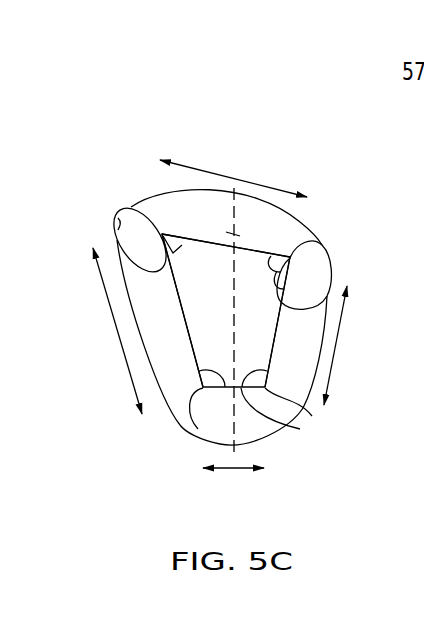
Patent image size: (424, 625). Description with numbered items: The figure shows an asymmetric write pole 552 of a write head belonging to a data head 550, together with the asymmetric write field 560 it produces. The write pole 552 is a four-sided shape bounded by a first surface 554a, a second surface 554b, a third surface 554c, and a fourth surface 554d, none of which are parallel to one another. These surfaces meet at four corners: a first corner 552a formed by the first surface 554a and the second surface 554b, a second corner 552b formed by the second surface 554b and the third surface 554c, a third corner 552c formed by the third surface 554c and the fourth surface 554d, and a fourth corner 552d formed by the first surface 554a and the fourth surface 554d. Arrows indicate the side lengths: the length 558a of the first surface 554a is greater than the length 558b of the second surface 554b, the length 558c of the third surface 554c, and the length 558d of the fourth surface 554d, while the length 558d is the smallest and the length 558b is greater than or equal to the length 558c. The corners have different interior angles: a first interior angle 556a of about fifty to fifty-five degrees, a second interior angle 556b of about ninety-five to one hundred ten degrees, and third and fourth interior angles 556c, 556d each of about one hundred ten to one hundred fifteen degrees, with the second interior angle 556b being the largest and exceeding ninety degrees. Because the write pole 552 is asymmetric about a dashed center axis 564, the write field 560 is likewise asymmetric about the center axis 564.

The data head 550 is at (146, 118).
The write pole 552 is at (227, 300).
The first corner 552a is at (130, 208).
The second corner 552b is at (345, 219).
The third corner 552c is at (311, 413).
The fourth corner 552d is at (195, 429).
The first surface 554a is at (117, 238).
The second surface 554b is at (266, 239).
The third surface 554c is at (329, 292).
The fourth surface 554d is at (268, 426).
The first interior angle 556a is at (181, 248).
The second interior angle 556b is at (302, 262).
The third interior angle 556c is at (260, 372).
The fourth interior angle 556d is at (206, 369).
The length of the first surface 558a is at (113, 328).
The length of the second surface 558b is at (213, 172).
The length of the third surface 558c is at (345, 343).
The length of the fourth surface 558d is at (233, 470).
The write field 560 is at (118, 219).
The center axis 564 is at (233, 235).